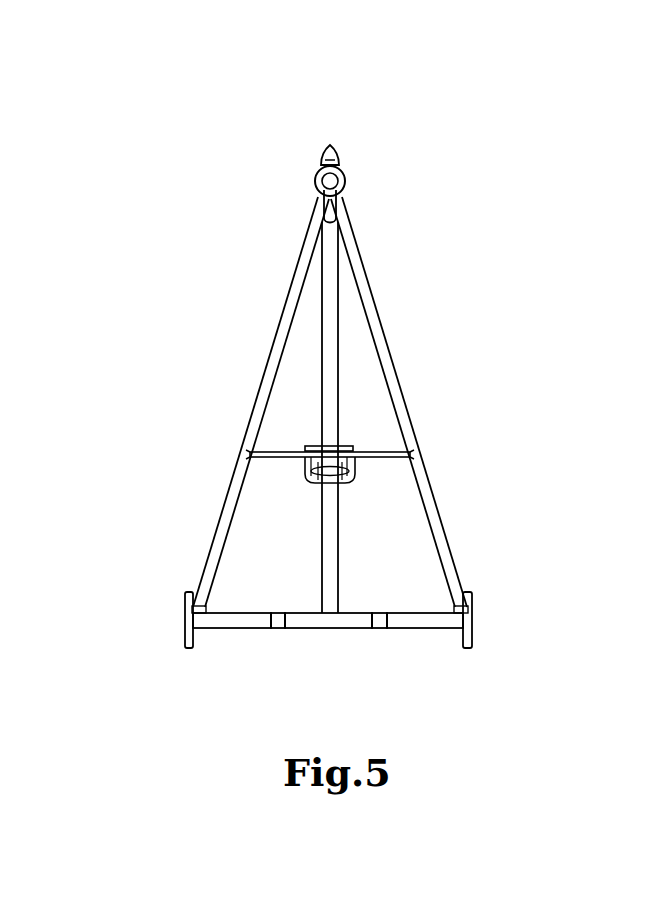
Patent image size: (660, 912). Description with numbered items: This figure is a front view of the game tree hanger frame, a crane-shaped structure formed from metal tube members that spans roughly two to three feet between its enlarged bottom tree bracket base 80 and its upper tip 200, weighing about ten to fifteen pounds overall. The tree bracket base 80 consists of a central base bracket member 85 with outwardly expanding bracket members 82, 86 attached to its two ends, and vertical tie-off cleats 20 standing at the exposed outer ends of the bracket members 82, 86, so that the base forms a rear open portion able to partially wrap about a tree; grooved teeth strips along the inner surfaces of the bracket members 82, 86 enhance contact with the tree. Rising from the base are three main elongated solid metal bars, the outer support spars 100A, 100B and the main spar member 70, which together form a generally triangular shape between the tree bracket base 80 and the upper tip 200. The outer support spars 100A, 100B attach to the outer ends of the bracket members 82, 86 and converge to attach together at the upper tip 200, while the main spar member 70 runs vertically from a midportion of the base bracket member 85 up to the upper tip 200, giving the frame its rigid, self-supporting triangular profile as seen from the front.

The upper tip 200 is at (362, 128).
The main spar member 70 is at (353, 417).
The outer support spar 100A is at (445, 405).
The outer support spar 100B is at (228, 405).
The tree bracket base 80 is at (526, 596).
The bracket member 82 is at (215, 655).
The base bracket member 85 is at (329, 660).
The bracket member 86 is at (444, 666).
The vertical tie-off cleat 20 is at (321, 635).